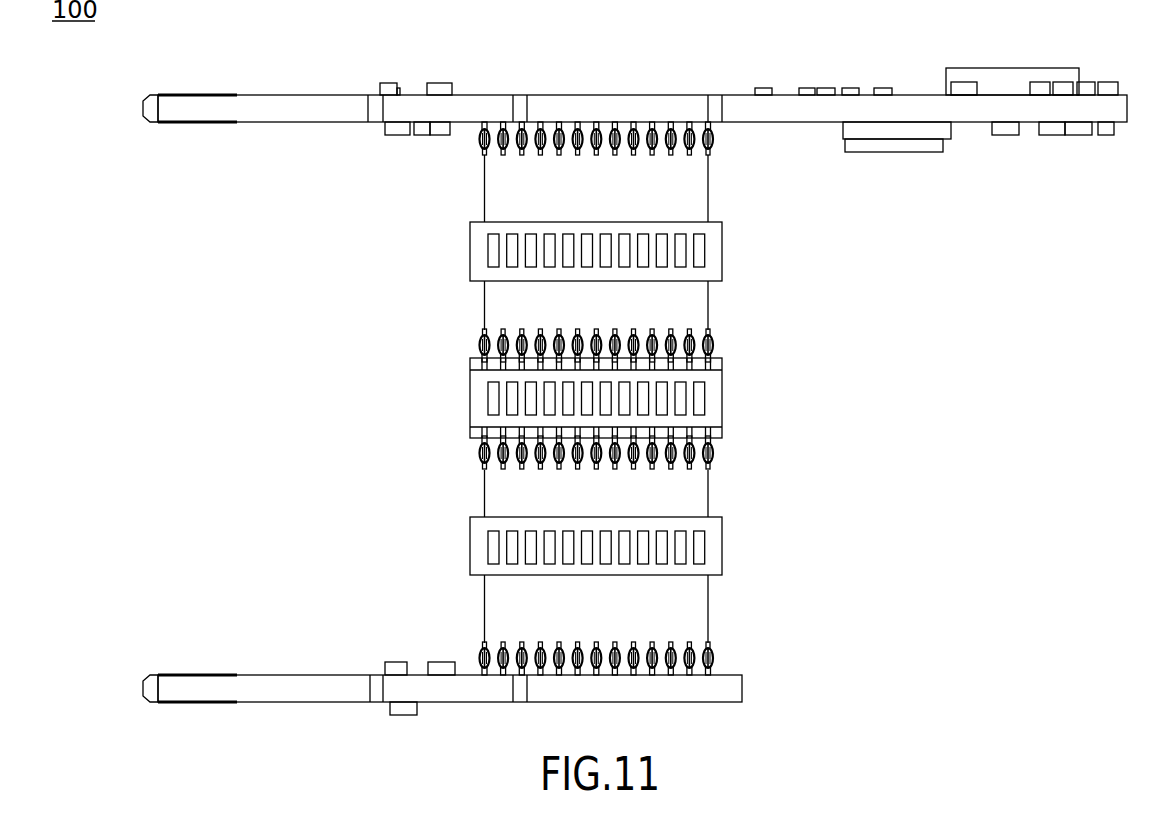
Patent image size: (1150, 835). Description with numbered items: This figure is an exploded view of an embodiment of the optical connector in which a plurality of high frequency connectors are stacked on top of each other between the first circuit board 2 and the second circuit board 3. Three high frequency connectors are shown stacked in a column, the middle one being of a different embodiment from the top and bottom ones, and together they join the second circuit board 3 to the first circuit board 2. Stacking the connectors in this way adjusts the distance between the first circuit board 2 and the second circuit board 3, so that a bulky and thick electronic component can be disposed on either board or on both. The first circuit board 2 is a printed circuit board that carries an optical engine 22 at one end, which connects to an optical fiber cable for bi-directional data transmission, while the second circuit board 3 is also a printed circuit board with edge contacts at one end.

The first circuit board 2 is at (138, 108).
The second circuit board 3 is at (138, 690).
The optical engine 22 is at (902, 146).